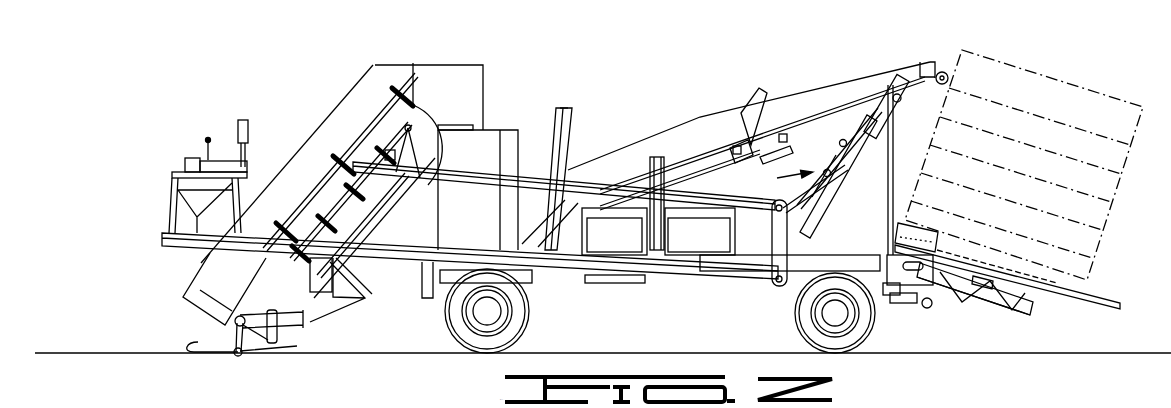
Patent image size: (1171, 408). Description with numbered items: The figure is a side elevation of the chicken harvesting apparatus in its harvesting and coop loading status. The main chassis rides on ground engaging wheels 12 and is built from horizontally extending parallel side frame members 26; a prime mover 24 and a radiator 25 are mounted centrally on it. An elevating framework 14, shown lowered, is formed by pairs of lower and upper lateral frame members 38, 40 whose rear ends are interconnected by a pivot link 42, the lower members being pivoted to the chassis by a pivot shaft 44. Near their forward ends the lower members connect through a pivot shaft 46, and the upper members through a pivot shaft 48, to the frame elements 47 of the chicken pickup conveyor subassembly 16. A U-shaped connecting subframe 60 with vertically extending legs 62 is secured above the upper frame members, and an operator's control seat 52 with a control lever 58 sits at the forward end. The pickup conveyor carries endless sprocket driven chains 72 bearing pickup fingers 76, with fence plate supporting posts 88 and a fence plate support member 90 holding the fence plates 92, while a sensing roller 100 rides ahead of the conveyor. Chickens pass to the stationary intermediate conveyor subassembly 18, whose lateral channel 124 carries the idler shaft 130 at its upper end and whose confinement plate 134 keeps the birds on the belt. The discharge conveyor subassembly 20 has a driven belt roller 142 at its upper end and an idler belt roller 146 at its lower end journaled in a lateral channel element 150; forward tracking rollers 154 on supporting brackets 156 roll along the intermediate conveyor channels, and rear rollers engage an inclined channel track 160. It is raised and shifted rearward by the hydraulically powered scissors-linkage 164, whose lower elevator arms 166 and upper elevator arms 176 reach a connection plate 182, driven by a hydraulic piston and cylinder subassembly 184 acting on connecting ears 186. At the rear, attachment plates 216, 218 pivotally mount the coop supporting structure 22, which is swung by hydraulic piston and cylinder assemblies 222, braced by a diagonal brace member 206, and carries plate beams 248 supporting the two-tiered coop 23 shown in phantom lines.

The ground engaging wheels 12 is at (460, 330).
The elevating framework 14 is at (662, 290).
The chicken pickup conveyor subassembly 16 is at (363, 300).
The stationary intermediate conveyor subassembly 18 is at (625, 140).
The discharge conveyor subassembly 20 is at (815, 88).
The coop supporting structure 22 is at (1047, 302).
The two-tiered, multiple bin coop 23 is at (1065, 80).
The prime mover 24 is at (712, 245).
The radiator 25 is at (628, 245).
The side frame members 26 is at (805, 260).
The lower lateral frame members 38 is at (693, 278).
The upper lateral frame members 40 is at (467, 175).
The pivot link 42 is at (775, 252).
The pivot shaft 44 is at (777, 248).
The pivot shaft 46 is at (308, 247).
The frame elements 47 is at (322, 227).
The pivot shaft 48 is at (375, 168).
The operator's control seat 52 is at (170, 183).
The control lever 58 is at (208, 140).
The U-shaped connecting subframe 60 is at (550, 107).
The vertically extending leg 62 is at (547, 118).
The endless sprocket driven chains 72 is at (387, 193).
The pickup fingers 76 is at (200, 343).
The fence plate supporting posts 88 is at (413, 103).
The fence plate support member 90 is at (240, 270).
The fence plates 92 is at (327, 171).
The sensing wheel or sensing roller 100 is at (237, 357).
The lateral channel 124 is at (680, 177).
The shaft 130 is at (745, 115).
The confinement plate 134 is at (632, 178).
The driven belt roller 142 is at (943, 72).
The idler belt roller 146 is at (787, 150).
The lateral channel element 150 is at (845, 118).
The forward tracking rollers 154 is at (730, 150).
The supporting bracket 156 is at (783, 134).
The channel track 160 is at (885, 138).
The hydraulically powered scissors-linkage 164 is at (776, 182).
The lower elevator arms 166 is at (822, 185).
The upper elevator arms 176 is at (838, 160).
The connection plate 182 is at (878, 108).
The hydraulic piston and cylinder subassembly 184 is at (803, 228).
The connecting ears 186 is at (843, 143).
The diagonal brace member 206 is at (960, 302).
The attachment plate 216 is at (883, 252).
The attachment plate 218 is at (930, 237).
The hydraulic piston and cylinder assemblies 222 is at (903, 300).
The plate beam 248 is at (1097, 303).